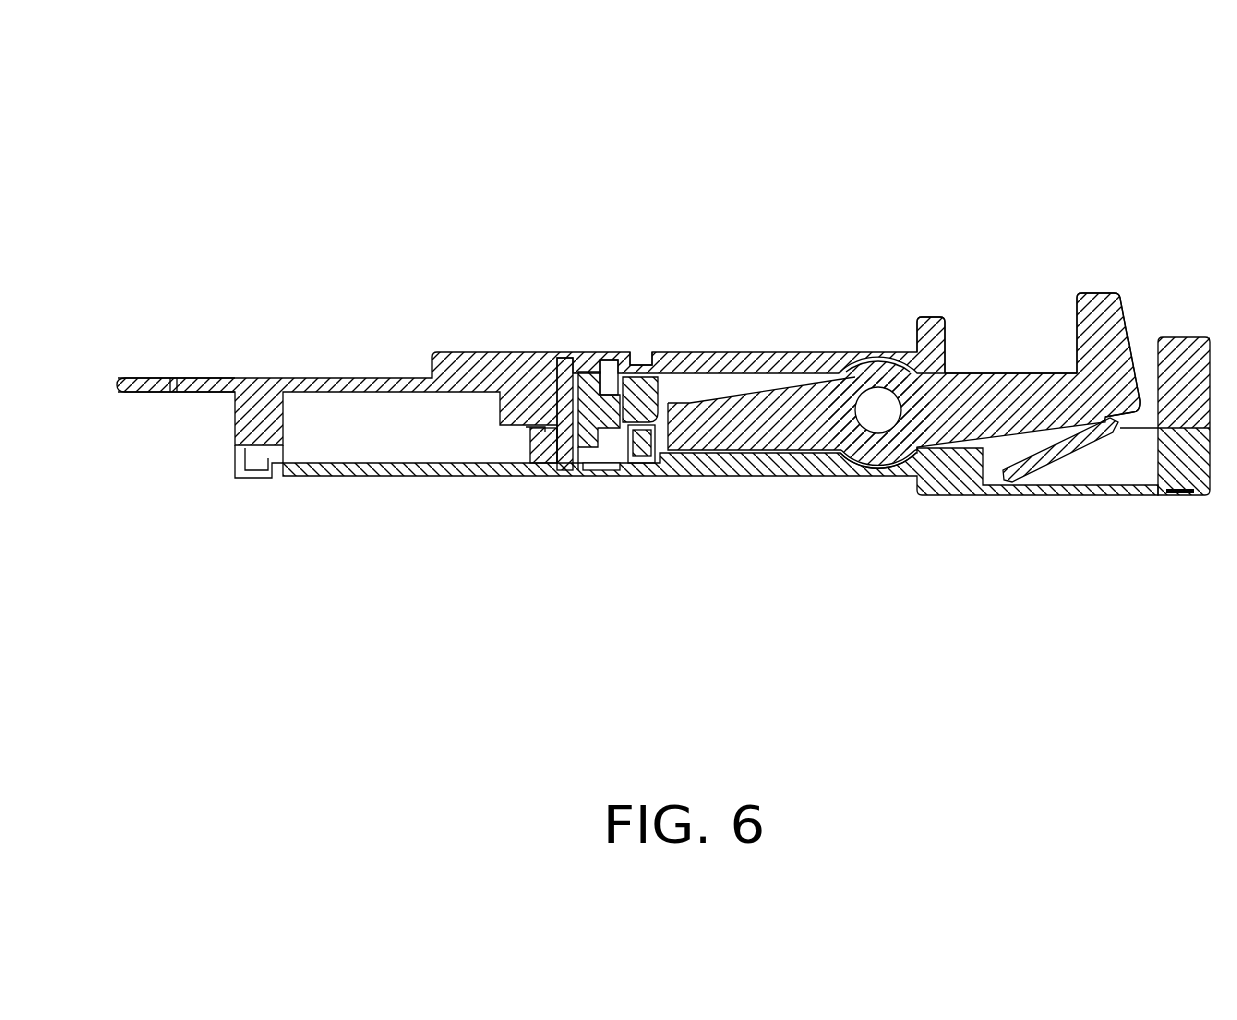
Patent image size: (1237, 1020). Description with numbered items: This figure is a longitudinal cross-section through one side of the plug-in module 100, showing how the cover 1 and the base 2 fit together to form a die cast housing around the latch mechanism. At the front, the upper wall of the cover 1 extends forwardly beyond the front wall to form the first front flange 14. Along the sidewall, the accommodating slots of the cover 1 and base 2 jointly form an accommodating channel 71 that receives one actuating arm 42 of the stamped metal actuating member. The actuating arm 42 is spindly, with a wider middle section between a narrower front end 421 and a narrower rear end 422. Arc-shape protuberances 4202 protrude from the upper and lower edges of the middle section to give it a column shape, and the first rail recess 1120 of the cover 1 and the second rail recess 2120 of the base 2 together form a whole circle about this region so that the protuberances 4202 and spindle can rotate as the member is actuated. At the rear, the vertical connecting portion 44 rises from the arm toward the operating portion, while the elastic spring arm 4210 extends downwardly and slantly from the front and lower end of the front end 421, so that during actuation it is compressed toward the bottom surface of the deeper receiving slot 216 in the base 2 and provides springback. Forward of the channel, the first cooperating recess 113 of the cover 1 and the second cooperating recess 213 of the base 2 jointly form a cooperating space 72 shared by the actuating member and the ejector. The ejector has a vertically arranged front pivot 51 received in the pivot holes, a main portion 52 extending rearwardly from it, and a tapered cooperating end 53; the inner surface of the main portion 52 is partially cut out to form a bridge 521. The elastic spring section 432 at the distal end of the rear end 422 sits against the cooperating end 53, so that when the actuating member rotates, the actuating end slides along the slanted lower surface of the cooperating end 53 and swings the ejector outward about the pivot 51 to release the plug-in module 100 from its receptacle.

The plug-in module 100 is at (664, 219).
The cover 1 is at (472, 372).
The first front flange 14 is at (195, 388).
The base 2 is at (425, 468).
The front pivot 51 is at (541, 468).
The main portion 52 is at (563, 423).
The second cooperating recess 213 is at (593, 458).
The first cooperating recess 113 is at (601, 375).
The cooperating end 53 is at (651, 400).
The cooperating space 72 is at (687, 435).
The bridge 521 is at (641, 463).
The spring section 432 is at (620, 430).
The actuating arm 42 is at (883, 403).
The rear end 422 is at (703, 476).
The accommodating channel 71 is at (740, 382).
The arc-shape protuberance 4202 is at (855, 463).
The second rail recess 2120 is at (887, 468).
The first rail recess 1120 is at (860, 355).
The front end 421 is at (1003, 395).
The connecting portion 44 is at (1095, 322).
The elastic spring arm 4210 is at (1057, 472).
The receiving slot 216 is at (1108, 468).